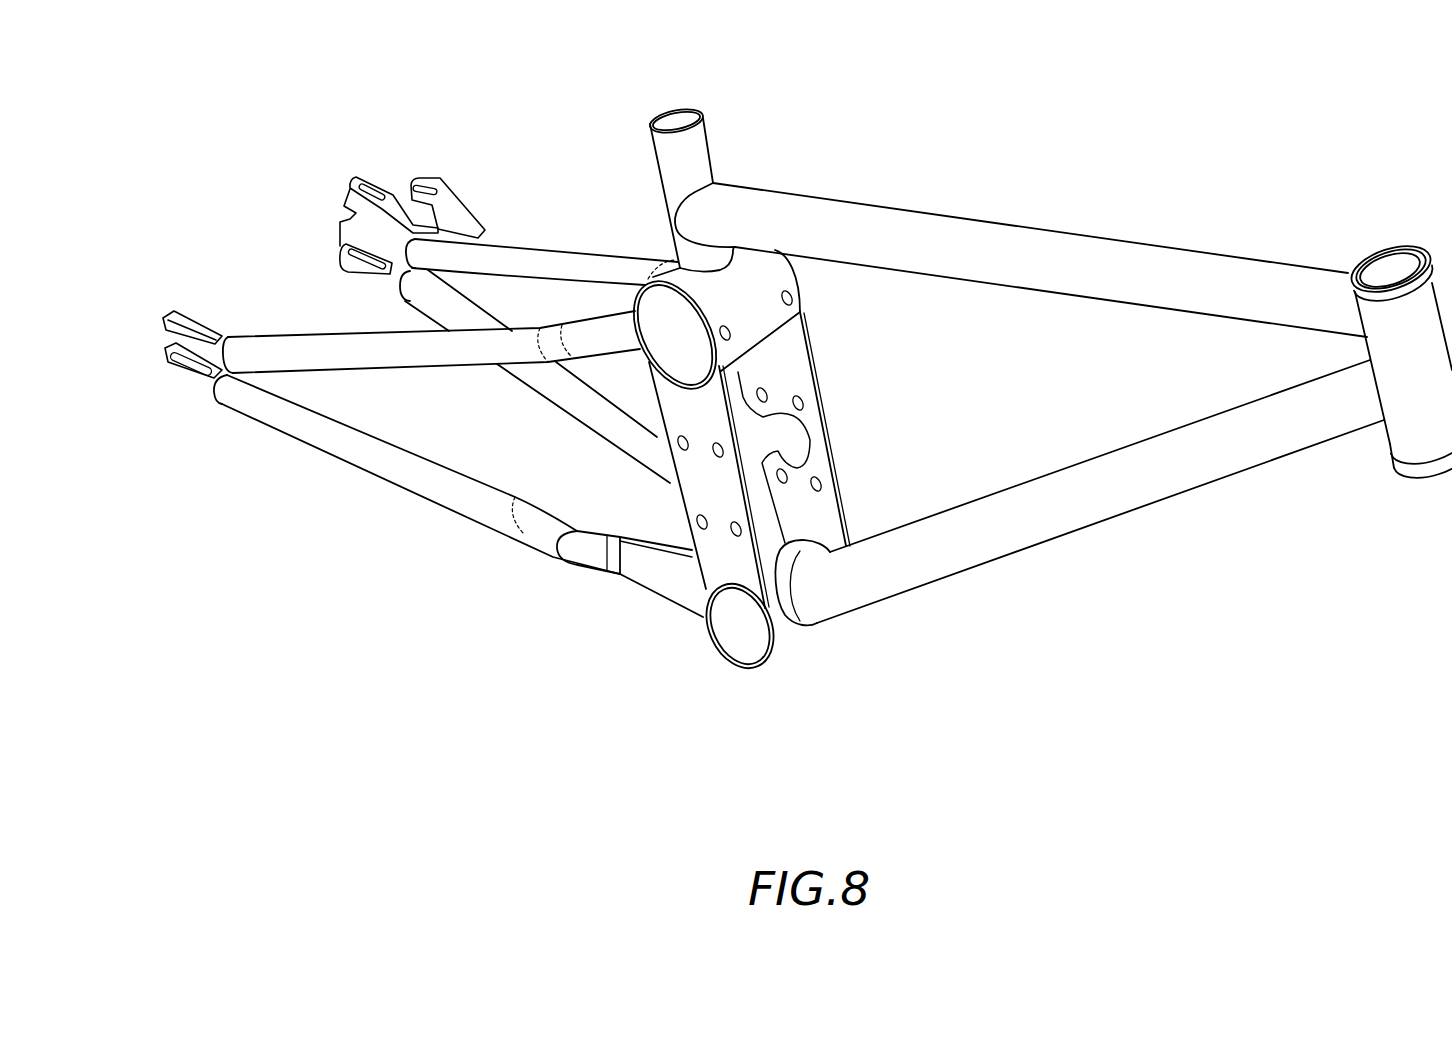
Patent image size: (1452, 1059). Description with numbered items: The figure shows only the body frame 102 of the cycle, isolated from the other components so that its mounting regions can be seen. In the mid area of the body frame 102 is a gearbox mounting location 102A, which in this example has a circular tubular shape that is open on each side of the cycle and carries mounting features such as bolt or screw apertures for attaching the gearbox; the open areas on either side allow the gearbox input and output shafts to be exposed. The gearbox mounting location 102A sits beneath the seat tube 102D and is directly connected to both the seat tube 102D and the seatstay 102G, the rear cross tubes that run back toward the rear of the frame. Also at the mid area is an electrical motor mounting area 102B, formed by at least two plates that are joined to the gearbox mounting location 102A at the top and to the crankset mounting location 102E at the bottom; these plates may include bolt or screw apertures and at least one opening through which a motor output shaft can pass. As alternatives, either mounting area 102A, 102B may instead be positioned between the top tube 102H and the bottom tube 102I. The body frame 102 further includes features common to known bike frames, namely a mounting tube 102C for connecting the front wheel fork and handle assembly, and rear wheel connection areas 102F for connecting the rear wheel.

The body frame 102 is at (776, 375).
The gearbox mounting location 102A is at (810, 419).
The electrical motor mounting area 102B is at (898, 460).
The mounting tube 102C is at (1345, 417).
The seat tube 102D is at (772, 155).
The crankset mounting location 102E is at (854, 650).
The rear wheel connection areas 102F is at (161, 442).
The seatstay 102G is at (509, 287).
The top tube 102H is at (1021, 238).
The bottom tube 102I is at (1079, 512).